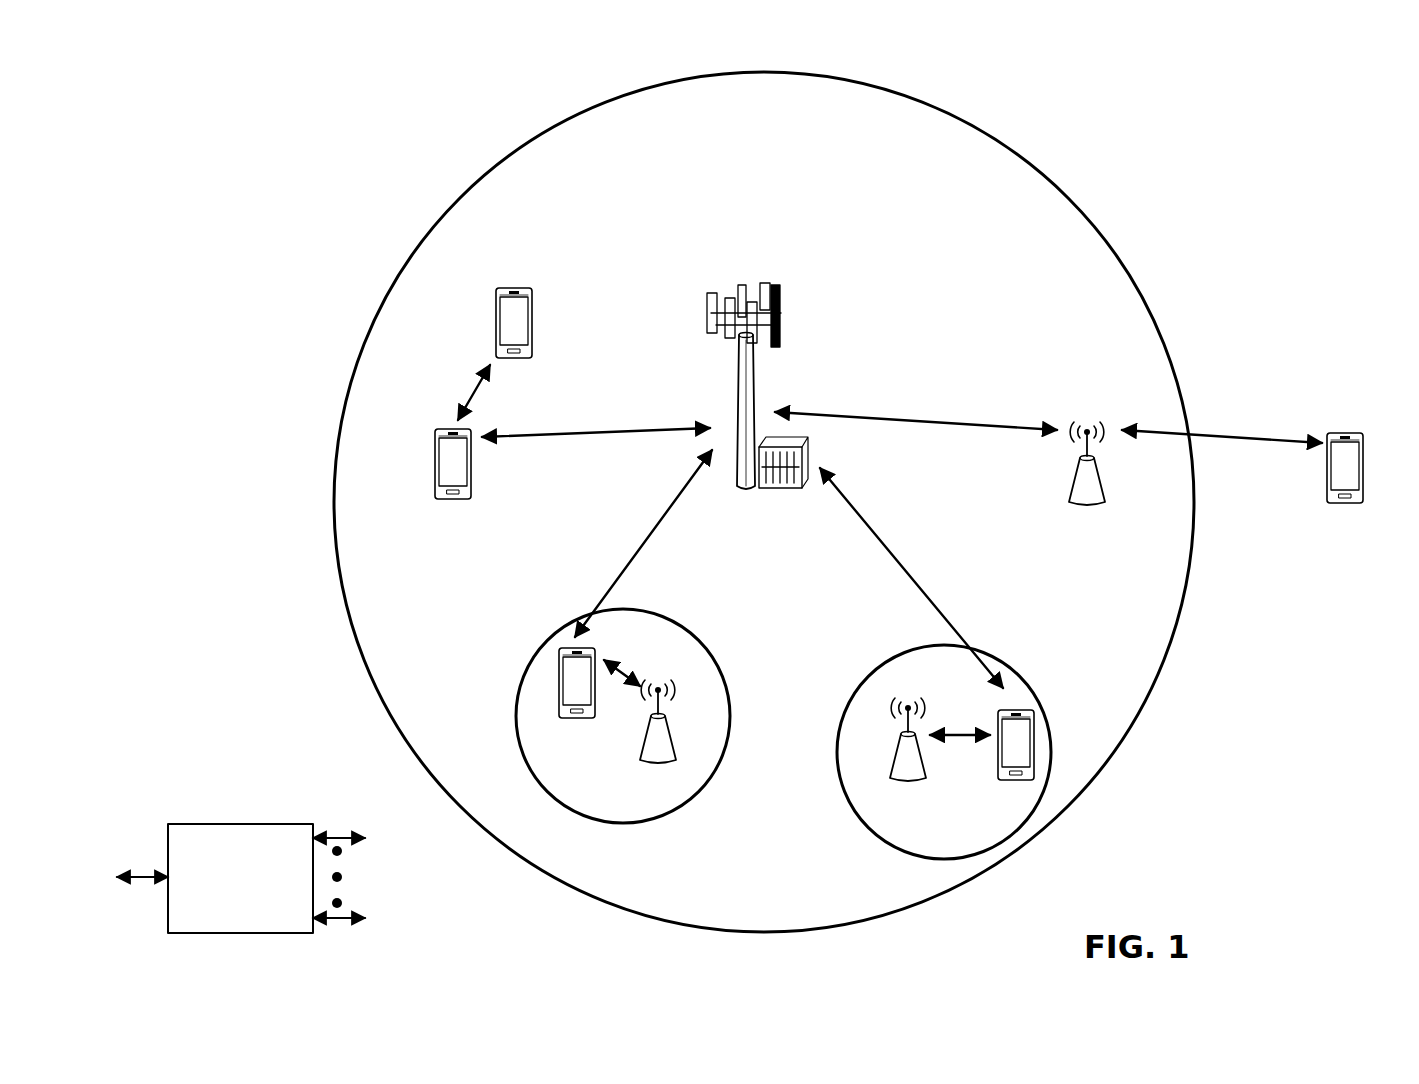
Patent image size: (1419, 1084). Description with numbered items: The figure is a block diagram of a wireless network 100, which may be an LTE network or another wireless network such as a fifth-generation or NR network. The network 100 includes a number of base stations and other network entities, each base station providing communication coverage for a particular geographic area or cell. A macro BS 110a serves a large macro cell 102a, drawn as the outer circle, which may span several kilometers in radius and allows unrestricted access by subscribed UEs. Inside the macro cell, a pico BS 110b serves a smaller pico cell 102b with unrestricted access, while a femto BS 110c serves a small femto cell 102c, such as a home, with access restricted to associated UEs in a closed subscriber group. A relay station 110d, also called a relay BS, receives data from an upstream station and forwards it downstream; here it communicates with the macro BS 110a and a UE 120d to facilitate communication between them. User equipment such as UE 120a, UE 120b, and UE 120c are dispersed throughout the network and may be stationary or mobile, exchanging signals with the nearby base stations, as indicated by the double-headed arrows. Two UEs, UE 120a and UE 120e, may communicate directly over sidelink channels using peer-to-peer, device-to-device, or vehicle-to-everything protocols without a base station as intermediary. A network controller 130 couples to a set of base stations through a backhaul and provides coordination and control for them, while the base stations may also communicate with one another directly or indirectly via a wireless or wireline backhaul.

The wireless network 100 is at (226, 70).
The macro cell 102a is at (1054, 184).
The pico cell 102b is at (712, 650).
The femto cell 102c is at (888, 666).
The macro BS 110a is at (752, 283).
The pico BS 110b is at (677, 746).
The femto BS 110c is at (892, 766).
The relay station 110d is at (1088, 424).
The UE 120a is at (435, 460).
The UE 120b is at (570, 718).
The UE 120c is at (1005, 780).
The UE 120d is at (1360, 433).
The UE 120e is at (496, 312).
The network controller 130 is at (240, 824).